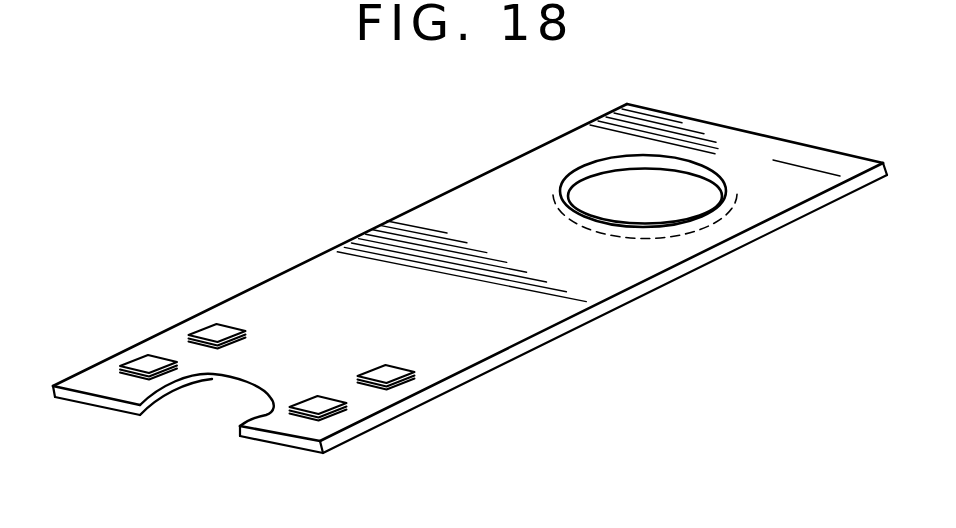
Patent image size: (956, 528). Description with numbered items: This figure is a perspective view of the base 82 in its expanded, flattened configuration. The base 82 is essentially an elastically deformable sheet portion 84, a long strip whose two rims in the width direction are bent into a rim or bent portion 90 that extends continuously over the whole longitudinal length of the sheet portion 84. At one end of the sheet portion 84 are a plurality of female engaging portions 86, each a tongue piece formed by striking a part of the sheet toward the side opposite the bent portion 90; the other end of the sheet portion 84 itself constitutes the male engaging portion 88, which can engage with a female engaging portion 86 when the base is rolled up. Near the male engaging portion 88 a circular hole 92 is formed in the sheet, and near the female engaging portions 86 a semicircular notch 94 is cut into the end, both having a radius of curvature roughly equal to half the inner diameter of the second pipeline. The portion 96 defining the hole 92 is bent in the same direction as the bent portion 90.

The base 82 is at (410, 202).
The sheet portion 84 is at (560, 309).
The female engaging portions 86 is at (142, 360).
The male engaging portion 88 is at (768, 137).
The bent portion 90 is at (508, 364).
The circular hole 92 is at (582, 220).
The semicircular notch 94 is at (246, 384).
The portion defining the hole 96 is at (672, 244).